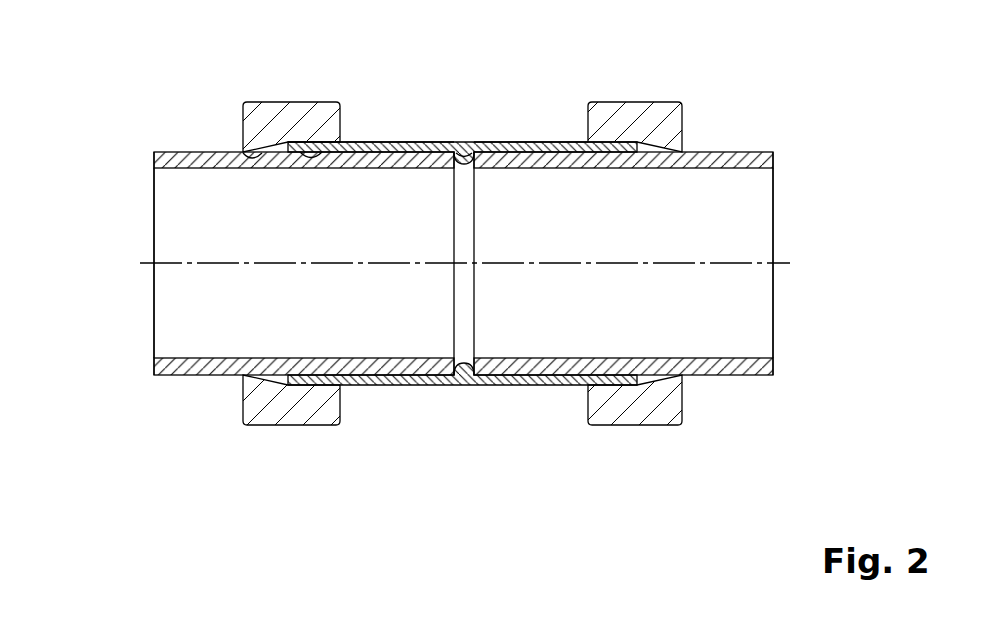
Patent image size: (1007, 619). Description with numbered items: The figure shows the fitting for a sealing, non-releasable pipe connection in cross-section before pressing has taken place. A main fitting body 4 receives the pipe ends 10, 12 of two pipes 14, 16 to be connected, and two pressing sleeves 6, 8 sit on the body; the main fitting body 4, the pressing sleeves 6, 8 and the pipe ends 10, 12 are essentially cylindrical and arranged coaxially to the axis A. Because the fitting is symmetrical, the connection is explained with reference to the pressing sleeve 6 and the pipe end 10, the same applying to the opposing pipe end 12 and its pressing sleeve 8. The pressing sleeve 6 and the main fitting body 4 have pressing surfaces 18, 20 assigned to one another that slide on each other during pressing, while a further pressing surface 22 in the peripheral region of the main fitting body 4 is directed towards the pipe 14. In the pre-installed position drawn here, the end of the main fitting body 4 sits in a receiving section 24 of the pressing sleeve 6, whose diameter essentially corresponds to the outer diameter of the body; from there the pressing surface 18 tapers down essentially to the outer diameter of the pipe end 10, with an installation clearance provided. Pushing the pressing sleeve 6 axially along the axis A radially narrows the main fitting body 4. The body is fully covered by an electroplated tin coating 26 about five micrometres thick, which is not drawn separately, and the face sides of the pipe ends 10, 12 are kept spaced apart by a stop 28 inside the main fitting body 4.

The axis A is at (168, 262).
The main fitting body 4 is at (453, 142).
The pressing sleeve 6 is at (328, 103).
The pressing sleeve 8 is at (652, 106).
The pipe end 10 is at (178, 150).
The pipe end 12 is at (728, 150).
The pipe 14 is at (121, 161).
The pipe 16 is at (796, 161).
The pressing surface 18 is at (243, 152).
The pressing surface 20 is at (318, 160).
The pressing surface 22 is at (352, 147).
The receiving section 24 is at (328, 142).
The coating 26 is at (526, 142).
The stop 28 is at (470, 148).